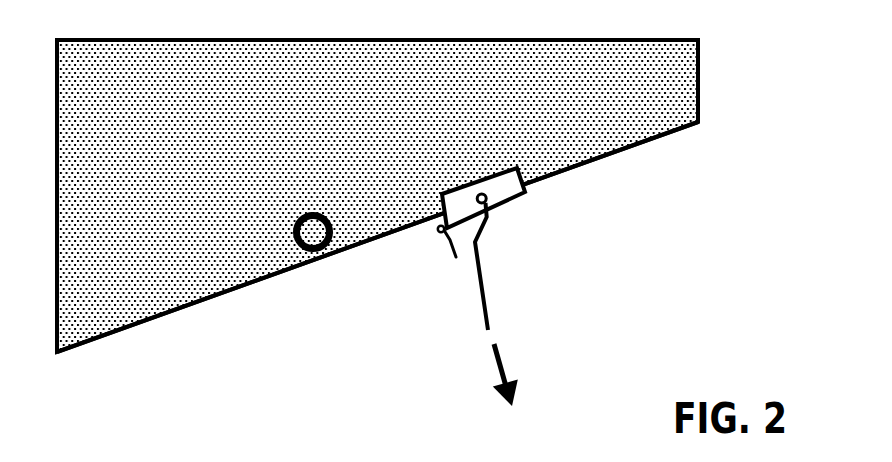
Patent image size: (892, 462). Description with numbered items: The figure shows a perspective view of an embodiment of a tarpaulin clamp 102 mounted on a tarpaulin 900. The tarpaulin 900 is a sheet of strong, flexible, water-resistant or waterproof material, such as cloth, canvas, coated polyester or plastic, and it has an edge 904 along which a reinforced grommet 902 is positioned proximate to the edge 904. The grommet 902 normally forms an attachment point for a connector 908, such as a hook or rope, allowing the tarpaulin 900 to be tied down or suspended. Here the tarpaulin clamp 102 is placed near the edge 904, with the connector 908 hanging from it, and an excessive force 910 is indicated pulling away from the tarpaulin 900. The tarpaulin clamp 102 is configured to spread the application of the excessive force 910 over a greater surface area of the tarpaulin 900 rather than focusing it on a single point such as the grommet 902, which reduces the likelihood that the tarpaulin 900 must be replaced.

The tarpaulin 900 is at (230, 118).
The grommet 902 is at (313, 253).
The edge 904 is at (260, 283).
The tarpaulin clamp 102 is at (523, 205).
The connector 908 is at (488, 318).
The excessive force 910 is at (495, 368).